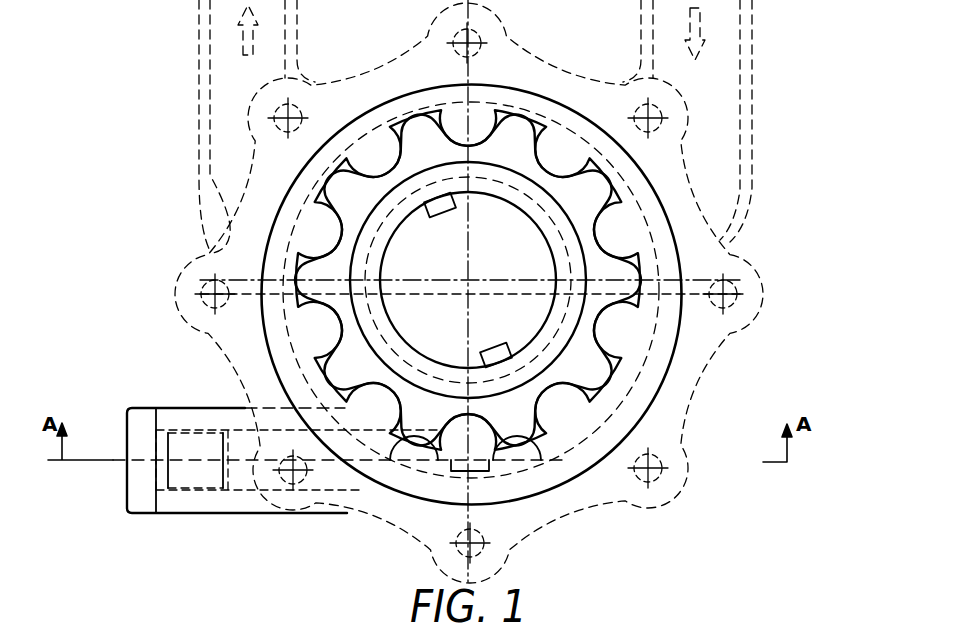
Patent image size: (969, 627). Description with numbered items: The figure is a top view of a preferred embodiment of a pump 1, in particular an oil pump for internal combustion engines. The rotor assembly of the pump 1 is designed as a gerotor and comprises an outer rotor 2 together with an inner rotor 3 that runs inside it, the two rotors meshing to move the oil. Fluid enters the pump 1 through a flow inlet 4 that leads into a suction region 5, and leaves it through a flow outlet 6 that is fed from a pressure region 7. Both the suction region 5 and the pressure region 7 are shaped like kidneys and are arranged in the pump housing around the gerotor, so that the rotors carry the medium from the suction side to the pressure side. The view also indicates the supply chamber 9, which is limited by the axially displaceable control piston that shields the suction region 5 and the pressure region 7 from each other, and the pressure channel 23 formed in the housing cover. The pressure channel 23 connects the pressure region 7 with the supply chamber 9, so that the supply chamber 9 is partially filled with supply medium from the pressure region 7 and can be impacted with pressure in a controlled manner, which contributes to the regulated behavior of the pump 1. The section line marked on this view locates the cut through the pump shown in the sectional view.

The pump 1 is at (776, 150).
The outer rotor 2 is at (672, 222).
The inner rotor 3 is at (622, 262).
The flow inlet 4 is at (723, 32).
The suction region 5 is at (627, 360).
The flow outlet 6 is at (232, 70).
The pressure region 7 is at (318, 390).
The supply chamber 9 is at (465, 425).
The pressure channel 23 is at (412, 428).